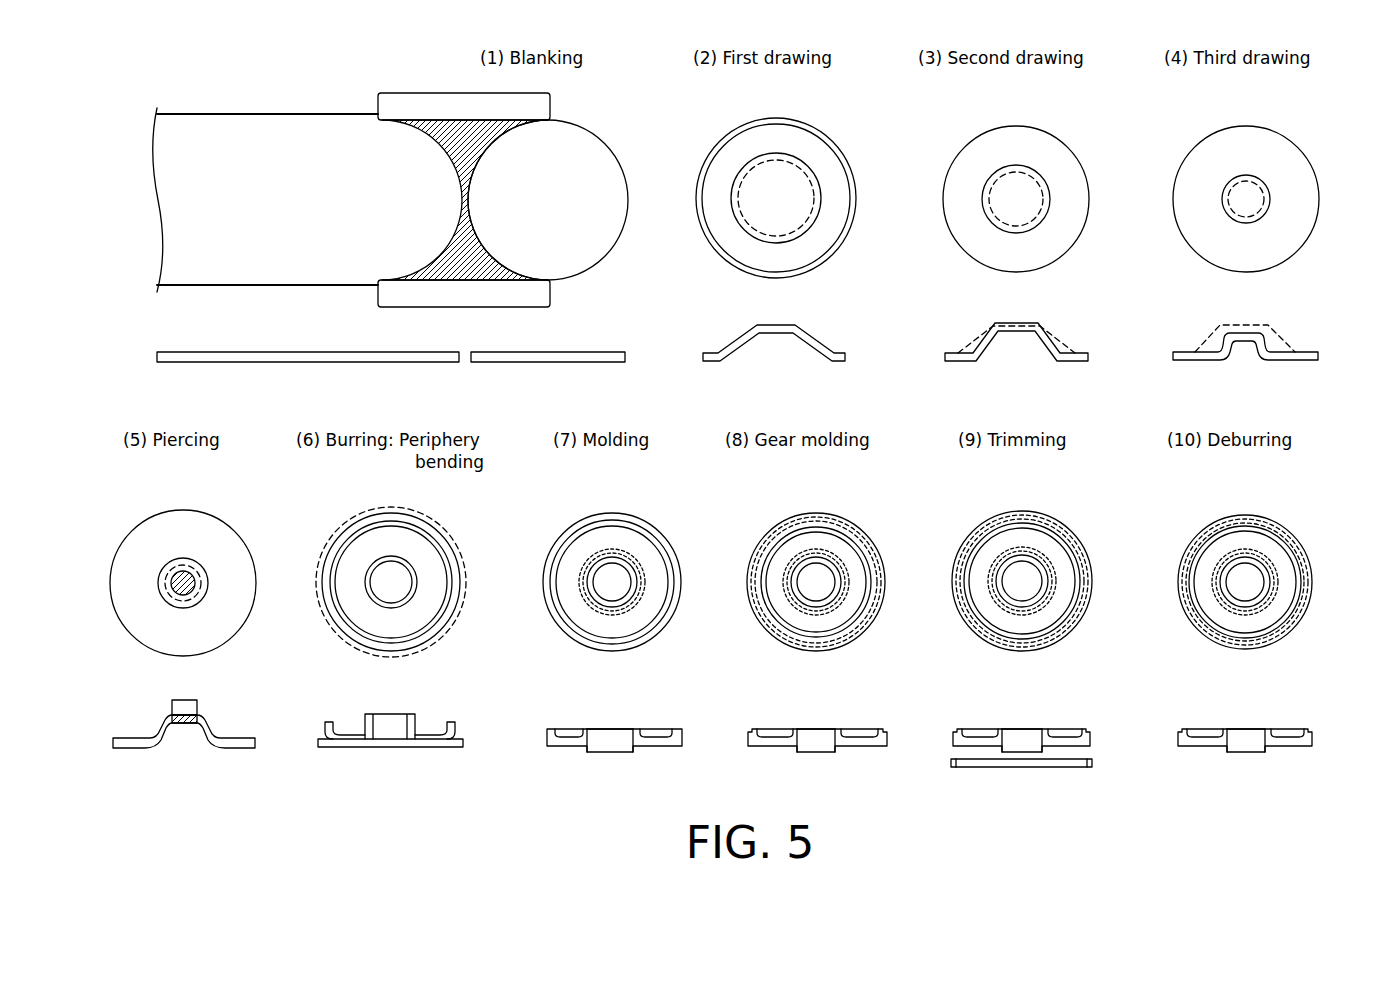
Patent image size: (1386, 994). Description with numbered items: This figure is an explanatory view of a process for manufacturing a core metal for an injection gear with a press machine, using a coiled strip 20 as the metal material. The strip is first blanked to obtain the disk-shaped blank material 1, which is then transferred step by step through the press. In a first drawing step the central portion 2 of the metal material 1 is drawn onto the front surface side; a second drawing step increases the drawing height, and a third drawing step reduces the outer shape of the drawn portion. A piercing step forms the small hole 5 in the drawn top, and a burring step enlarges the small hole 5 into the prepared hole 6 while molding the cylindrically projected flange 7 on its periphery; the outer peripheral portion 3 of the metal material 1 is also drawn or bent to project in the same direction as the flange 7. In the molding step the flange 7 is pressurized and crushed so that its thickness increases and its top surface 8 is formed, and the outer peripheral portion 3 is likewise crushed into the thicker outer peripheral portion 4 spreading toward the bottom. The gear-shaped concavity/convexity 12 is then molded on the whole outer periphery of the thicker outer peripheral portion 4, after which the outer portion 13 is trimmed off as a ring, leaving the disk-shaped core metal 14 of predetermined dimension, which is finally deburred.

The metal strip material 20 is at (236, 130).
The blank material 1 is at (580, 146).
The central portion 2 is at (793, 177).
The outer peripheral portion 3 is at (455, 724).
The thicker outer peripheral portion 4 is at (668, 556).
The small hole 5 is at (186, 565).
The prepared hole 6 is at (397, 573).
The flange 7 is at (410, 595).
The boss top surface 8 is at (633, 729).
The gear-shaped concavity/convexity 12 is at (876, 547).
The outer portion 13 is at (1093, 590).
The disk-shaped core metal 14 is at (855, 605).